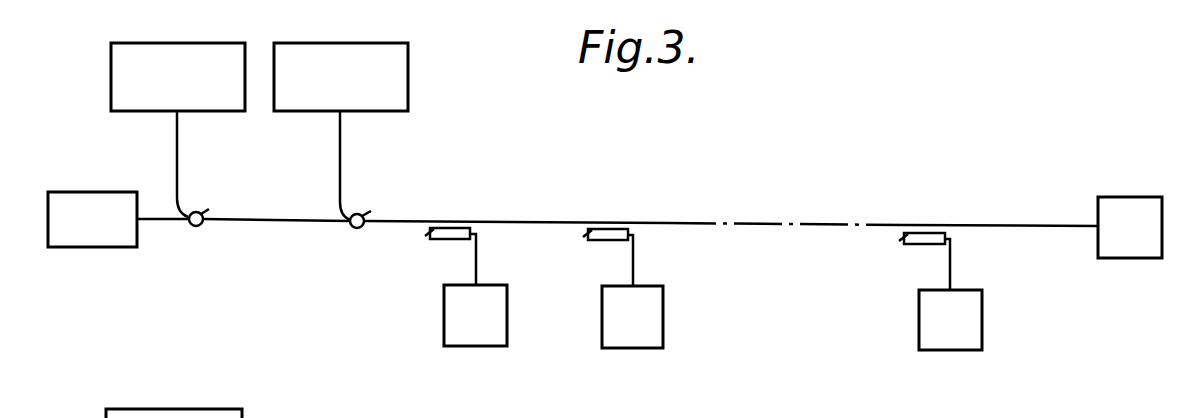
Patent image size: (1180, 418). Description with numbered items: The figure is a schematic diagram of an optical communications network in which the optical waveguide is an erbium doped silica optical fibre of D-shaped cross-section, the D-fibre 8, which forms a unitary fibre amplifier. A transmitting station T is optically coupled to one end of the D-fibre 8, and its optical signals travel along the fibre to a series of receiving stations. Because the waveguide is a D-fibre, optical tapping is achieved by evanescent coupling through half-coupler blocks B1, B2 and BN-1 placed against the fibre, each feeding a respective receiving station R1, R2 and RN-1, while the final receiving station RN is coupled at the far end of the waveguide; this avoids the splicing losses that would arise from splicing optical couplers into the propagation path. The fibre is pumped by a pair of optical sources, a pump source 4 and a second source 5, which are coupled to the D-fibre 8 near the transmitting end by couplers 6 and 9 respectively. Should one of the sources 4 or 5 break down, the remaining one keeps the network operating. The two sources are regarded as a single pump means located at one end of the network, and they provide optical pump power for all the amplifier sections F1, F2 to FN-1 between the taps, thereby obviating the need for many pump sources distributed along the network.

The optical pump source 4 is at (111, 45).
The optical pump source 5 is at (409, 48).
The coupler 6 is at (197, 226).
The D-fibre optical waveguide 8 is at (158, 220).
The coupler 9 is at (366, 210).
The transmitting station T is at (93, 236).
The amplifier section F1 is at (513, 218).
The amplifier section F2 is at (652, 219).
The amplifier section FN-1 is at (1010, 218).
The half-coupler block B1 is at (442, 243).
The half-coupler block B2 is at (601, 244).
The half-coupler block BN-1 is at (918, 245).
The receiving station R1 is at (444, 331).
The receiving station R2 is at (664, 325).
The receiving station RN-1 is at (957, 340).
The receiving station RN is at (1138, 250).